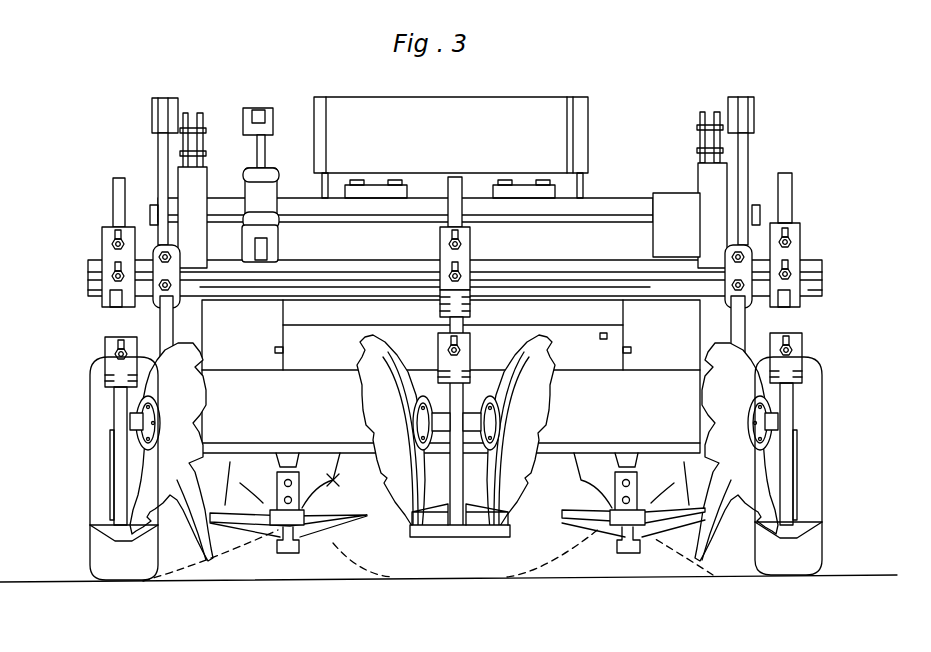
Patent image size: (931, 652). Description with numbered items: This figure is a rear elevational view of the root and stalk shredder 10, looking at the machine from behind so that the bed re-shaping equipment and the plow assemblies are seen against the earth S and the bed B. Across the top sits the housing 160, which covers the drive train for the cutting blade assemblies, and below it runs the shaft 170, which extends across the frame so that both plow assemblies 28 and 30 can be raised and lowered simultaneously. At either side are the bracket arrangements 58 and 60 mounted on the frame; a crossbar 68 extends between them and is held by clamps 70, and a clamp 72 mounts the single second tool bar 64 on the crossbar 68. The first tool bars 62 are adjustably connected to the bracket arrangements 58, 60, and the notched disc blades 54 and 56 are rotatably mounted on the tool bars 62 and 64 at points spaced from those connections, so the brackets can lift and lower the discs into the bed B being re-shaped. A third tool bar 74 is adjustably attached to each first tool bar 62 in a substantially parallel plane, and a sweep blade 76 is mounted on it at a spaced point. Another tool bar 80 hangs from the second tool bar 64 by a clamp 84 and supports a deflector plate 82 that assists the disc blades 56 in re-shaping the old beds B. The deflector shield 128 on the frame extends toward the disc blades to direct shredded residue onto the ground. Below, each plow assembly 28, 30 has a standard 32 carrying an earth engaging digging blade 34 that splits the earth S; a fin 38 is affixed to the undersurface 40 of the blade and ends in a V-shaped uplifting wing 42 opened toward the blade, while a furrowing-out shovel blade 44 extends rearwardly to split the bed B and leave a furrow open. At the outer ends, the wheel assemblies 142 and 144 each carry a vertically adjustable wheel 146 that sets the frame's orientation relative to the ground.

The root and stalk shredder 10 is at (505, 90).
The plow assembly 28 is at (607, 537).
The plow assembly 30 is at (350, 537).
The standard 32 is at (170, 333).
The earth engaging digging blade 34 is at (572, 524).
The fin 38 is at (622, 542).
The undersurface 40 is at (318, 538).
The uplifting wing 42 is at (278, 552).
The furrowing-out shovel blade 44 is at (333, 480).
The notched disc blade 54 is at (185, 395).
The notched disc blade 56 is at (367, 418).
The bracket arrangement 58 is at (762, 148).
The bracket arrangement 60 is at (157, 168).
The first tool bar 62 is at (118, 197).
The second tool bar 64 is at (447, 185).
The crossbar 68 is at (244, 294).
The clamp 70 is at (104, 257).
The clamp 72 is at (472, 243).
The third tool bar 74 is at (118, 405).
The sweep blade 76 is at (105, 350).
The tool bar 80 is at (445, 397).
The deflector plate 82 is at (440, 538).
The clamp 84 is at (471, 347).
The deflector shield 128 is at (606, 337).
The wheel assembly 142 is at (823, 462).
The wheel assembly 144 is at (90, 452).
The wheel 146 is at (100, 485).
The housing 160 is at (583, 100).
The shaft 170 is at (603, 198).
The earth S is at (28, 582).
The bed B is at (293, 578).